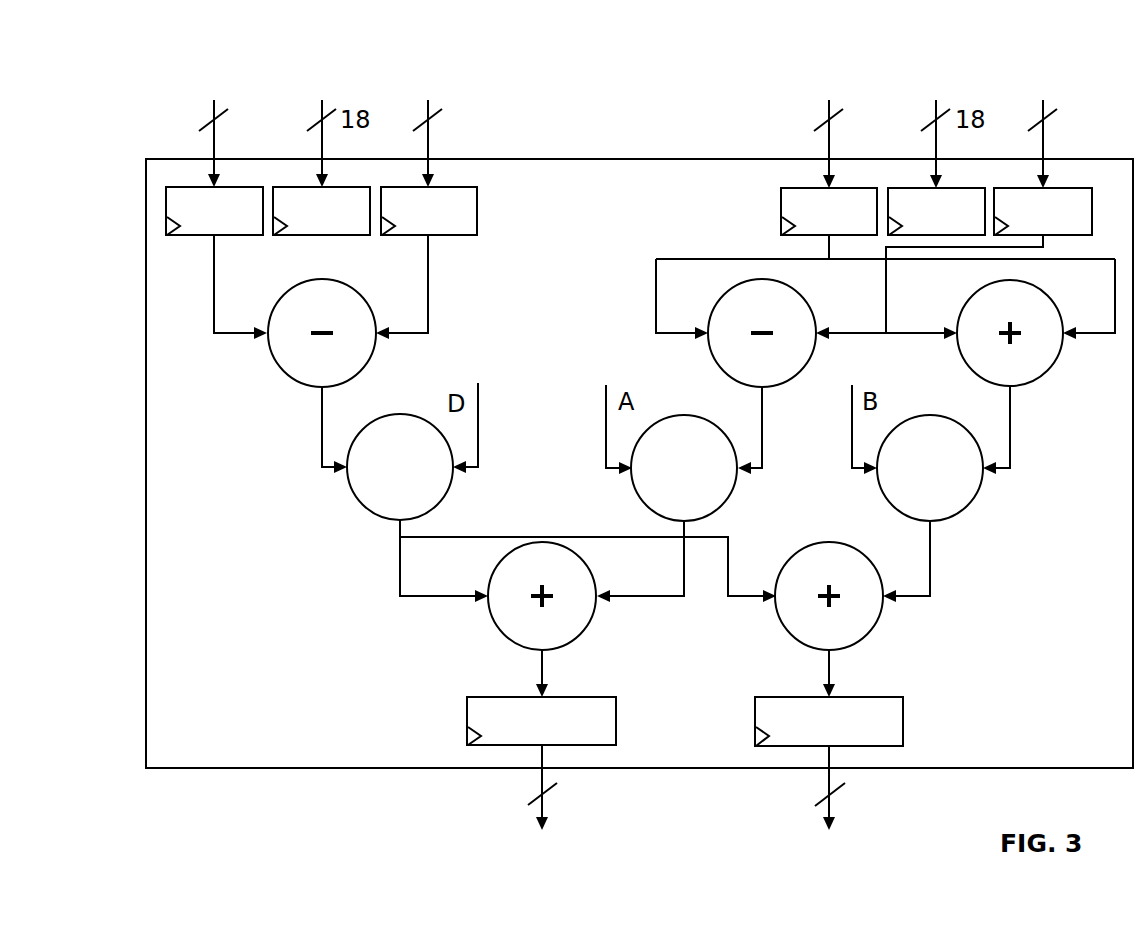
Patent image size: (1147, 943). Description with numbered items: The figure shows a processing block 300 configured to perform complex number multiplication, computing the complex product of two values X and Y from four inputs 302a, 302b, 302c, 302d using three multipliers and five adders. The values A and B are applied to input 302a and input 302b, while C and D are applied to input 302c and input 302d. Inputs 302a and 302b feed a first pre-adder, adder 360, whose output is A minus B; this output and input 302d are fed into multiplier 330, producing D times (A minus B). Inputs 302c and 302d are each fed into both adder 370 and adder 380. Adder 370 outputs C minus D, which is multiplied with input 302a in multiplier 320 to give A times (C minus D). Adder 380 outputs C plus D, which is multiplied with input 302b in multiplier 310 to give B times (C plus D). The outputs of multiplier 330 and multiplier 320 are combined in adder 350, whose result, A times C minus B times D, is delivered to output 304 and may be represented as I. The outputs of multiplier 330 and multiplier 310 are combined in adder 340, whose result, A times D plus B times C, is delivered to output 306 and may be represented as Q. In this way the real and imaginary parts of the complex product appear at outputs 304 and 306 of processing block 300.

The processing block 300 is at (148, 48).
The input 302a is at (215, 103).
The input 302b is at (429, 103).
The input 302c is at (830, 103).
The input 302d is at (1044, 103).
The output 304 is at (543, 805).
The output 306 is at (830, 805).
The multiplier 310 is at (970, 505).
The multiplier 320 is at (725, 505).
The multiplier 330 is at (442, 503).
The adder 340 is at (863, 635).
The adder 350 is at (583, 632).
The adder 360 is at (365, 363).
The adder 370 is at (779, 385).
The adder 380 is at (1045, 373).